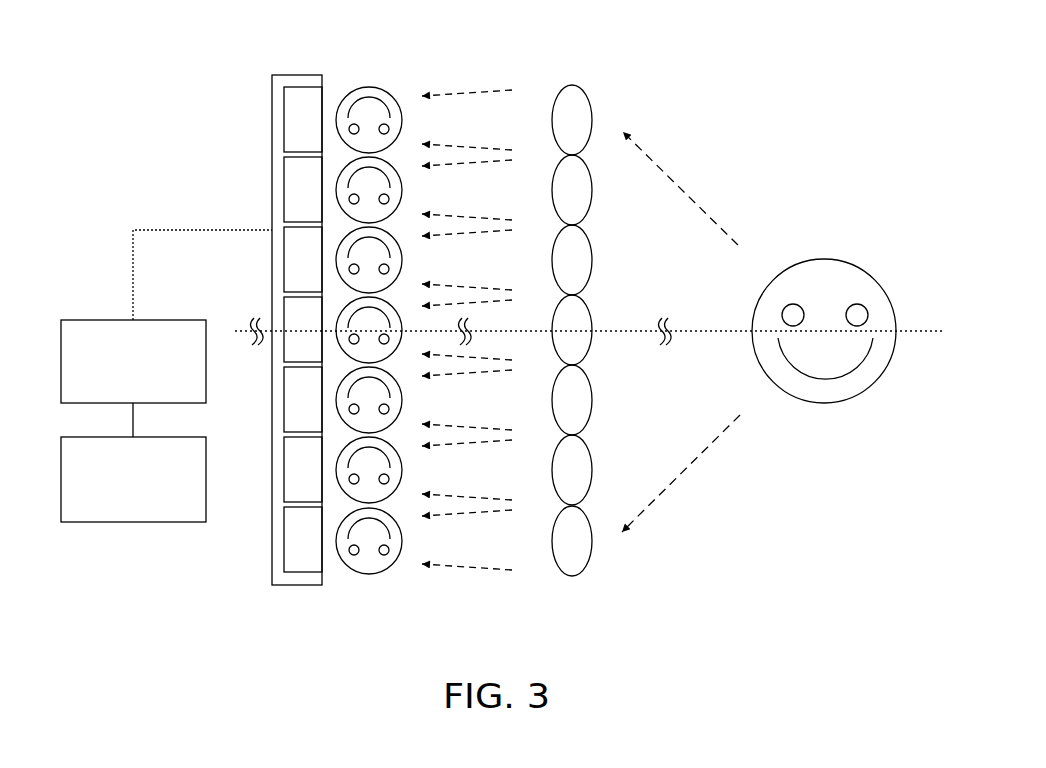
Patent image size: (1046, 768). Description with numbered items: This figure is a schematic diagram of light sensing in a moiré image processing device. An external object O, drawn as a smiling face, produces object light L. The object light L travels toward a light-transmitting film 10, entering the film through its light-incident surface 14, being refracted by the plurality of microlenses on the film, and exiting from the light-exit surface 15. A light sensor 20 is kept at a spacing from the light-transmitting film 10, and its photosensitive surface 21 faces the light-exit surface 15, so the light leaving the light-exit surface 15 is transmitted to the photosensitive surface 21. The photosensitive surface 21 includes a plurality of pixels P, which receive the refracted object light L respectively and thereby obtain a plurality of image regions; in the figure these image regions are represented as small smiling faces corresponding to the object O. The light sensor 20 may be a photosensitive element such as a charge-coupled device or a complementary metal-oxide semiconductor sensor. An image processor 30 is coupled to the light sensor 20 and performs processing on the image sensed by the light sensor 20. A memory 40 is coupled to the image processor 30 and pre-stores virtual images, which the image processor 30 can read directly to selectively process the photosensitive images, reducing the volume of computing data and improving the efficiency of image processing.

The light-transmitting film 10 is at (575, 289).
The light-incident surface 14 is at (574, 225).
The light-exit surface 15 is at (560, 295).
The light sensor 20 is at (253, 339).
The photosensitive surface 21 is at (325, 557).
The pixels P is at (300, 122).
The image processor 30 is at (88, 320).
The memory 40 is at (100, 522).
The object light L is at (693, 199).
The external object O is at (829, 258).